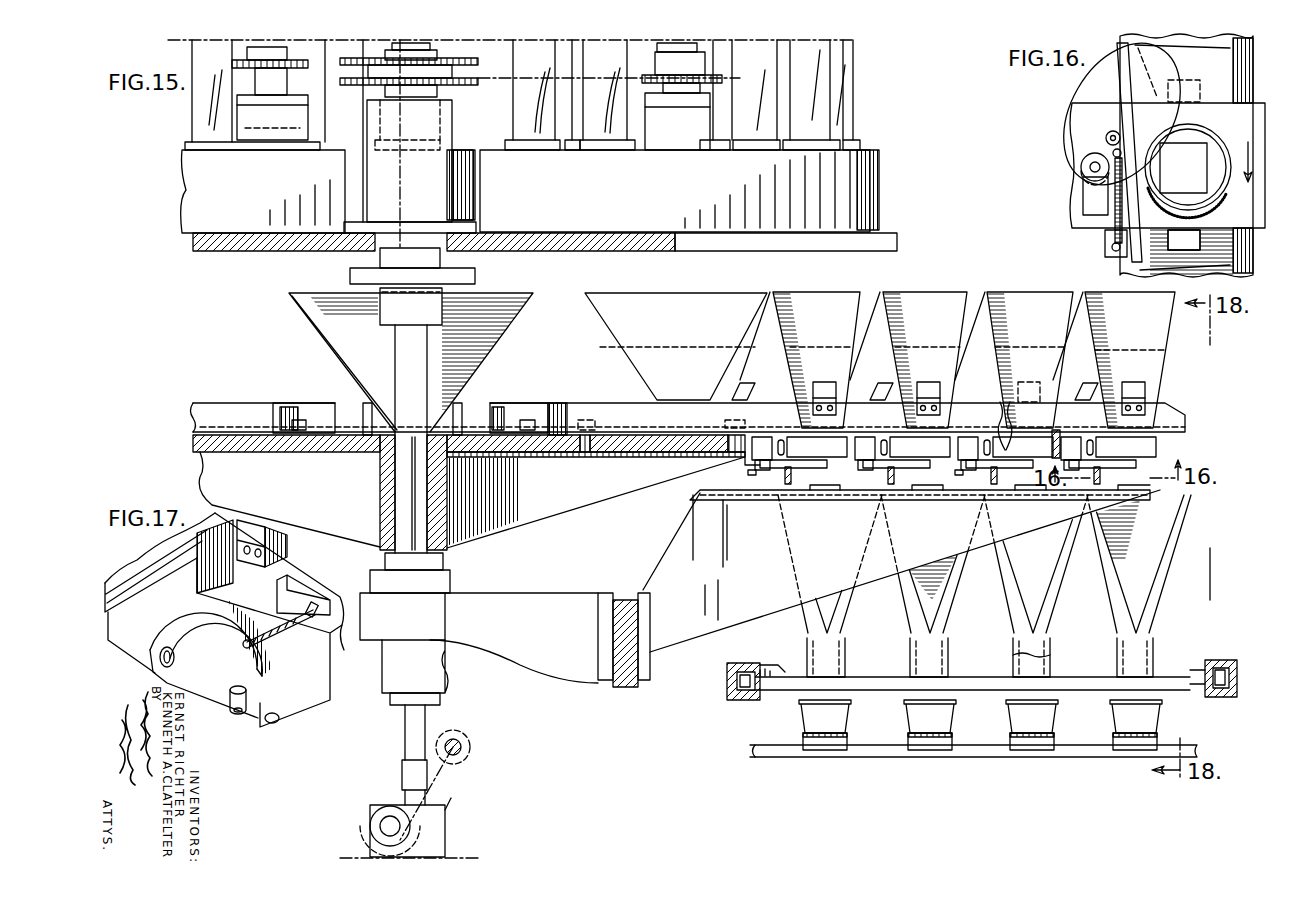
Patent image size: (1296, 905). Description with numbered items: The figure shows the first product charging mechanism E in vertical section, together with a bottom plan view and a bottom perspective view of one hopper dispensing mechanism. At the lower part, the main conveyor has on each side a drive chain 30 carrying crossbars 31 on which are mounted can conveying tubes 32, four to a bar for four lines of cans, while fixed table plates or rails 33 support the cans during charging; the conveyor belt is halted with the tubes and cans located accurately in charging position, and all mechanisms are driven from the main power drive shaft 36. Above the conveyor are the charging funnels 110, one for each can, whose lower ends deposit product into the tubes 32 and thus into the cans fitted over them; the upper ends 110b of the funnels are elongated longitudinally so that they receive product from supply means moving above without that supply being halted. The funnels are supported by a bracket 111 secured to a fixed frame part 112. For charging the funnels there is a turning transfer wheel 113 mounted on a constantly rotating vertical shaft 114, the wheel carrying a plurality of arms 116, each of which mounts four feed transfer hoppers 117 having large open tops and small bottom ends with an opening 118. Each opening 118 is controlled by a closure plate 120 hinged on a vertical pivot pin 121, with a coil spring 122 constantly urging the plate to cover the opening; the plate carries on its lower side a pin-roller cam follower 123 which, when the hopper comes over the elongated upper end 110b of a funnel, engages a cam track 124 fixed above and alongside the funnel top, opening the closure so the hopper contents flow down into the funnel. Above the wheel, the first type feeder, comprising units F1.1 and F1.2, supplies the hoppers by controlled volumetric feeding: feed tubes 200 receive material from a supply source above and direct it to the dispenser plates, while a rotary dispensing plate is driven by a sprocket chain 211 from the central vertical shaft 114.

In FIG. 15, the feed tubes 200 is at (340, 122).
In FIG. 15, the sprocket chain 211 is at (497, 88).
In FIG. 15, the first type feeder unit F1.1 is at (868, 178).
In FIG. 15, the first type feeder unit F1.2 is at (195, 210).
In FIG. 15, the feed transfer hoppers 117 is at (597, 296).
In FIG. 16, the feed transfer hoppers 117 is at (1245, 240).
In FIG. 17, the feed transfer hoppers 117 is at (158, 545).
In FIG. 15, the arms 116 is at (212, 410).
In FIG. 16, the arms 116 is at (1072, 112).
In FIG. 17, the arms 116 is at (305, 588).
In FIG. 15, the bottom opening 118 is at (1045, 448).
In FIG. 16, the bottom opening 118 is at (1128, 160).
In FIG. 17, the bottom opening 118 is at (153, 663).
In FIG. 15, the turning transfer wheel 113 is at (533, 452).
In FIG. 15, the vertical shaft 114 is at (440, 512).
In FIG. 15, the bracket 111 is at (693, 535).
In FIG. 15, the fixed frame part 112 is at (630, 688).
In FIG. 15, the main power drive shaft 36 is at (470, 752).
In FIG. 15, the closure plate 120 is at (797, 458).
In FIG. 16, the closure plate 120 is at (1175, 72).
In FIG. 17, the closure plate 120 is at (190, 633).
In FIG. 15, the pin-roller cam follower 123 is at (770, 471).
In FIG. 16, the pin-roller cam follower 123 is at (1106, 138).
In FIG. 17, the pin-roller cam follower 123 is at (234, 713).
In FIG. 15, the cam track 124 is at (790, 483).
In FIG. 16, the cam track 124 is at (1125, 88).
In FIG. 16, the vertical pivot pin 121 is at (1090, 167).
In FIG. 17, the vertical pivot pin 121 is at (274, 724).
In FIG. 16, the coil spring 122 is at (1118, 220).
In FIG. 17, the coil spring 122 is at (282, 636).
In FIG. 15, the charging funnels 110 is at (846, 596).
In FIG. 15, the upper ends of the funnels 110b is at (1145, 490).
In FIG. 15, the first product charging mechanism E is at (1182, 530).
In FIG. 15, the drive chain 30 is at (748, 700).
In FIG. 15, the crossbars 31 is at (966, 680).
In FIG. 15, the can conveying tubes 32 is at (923, 657).
In FIG. 15, the table plates or rails 33 is at (803, 740).
In FIG. 15, the container W is at (905, 722).